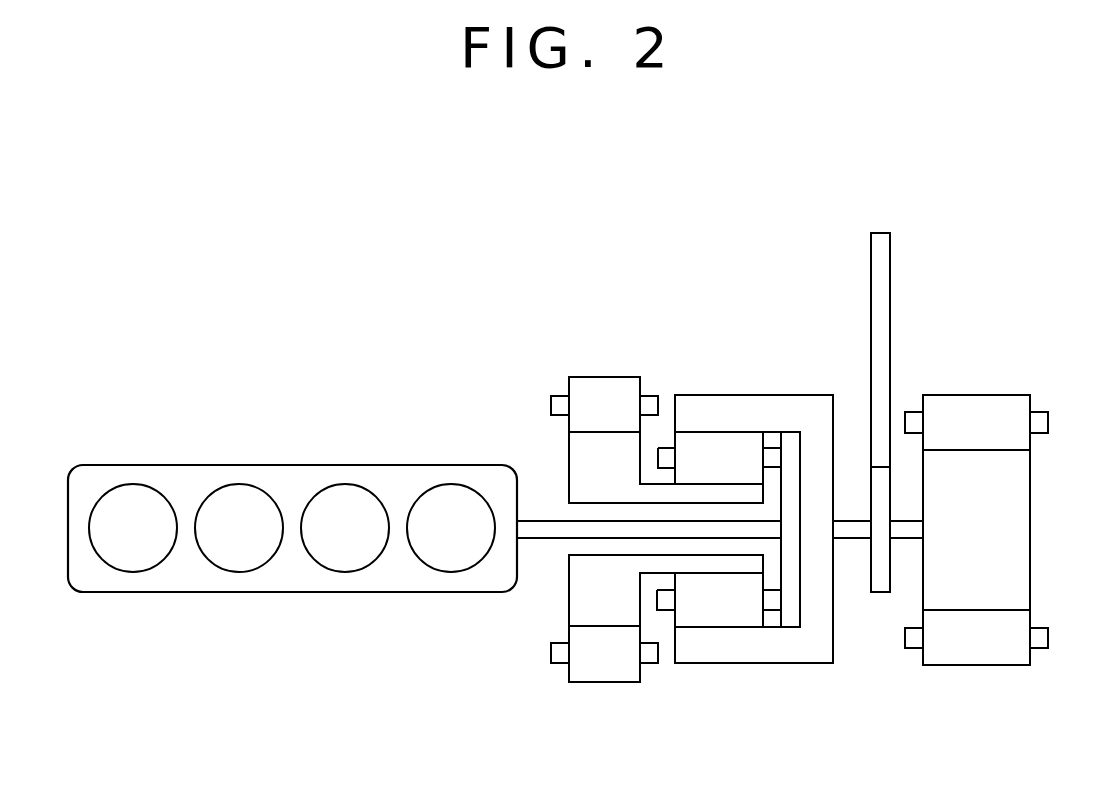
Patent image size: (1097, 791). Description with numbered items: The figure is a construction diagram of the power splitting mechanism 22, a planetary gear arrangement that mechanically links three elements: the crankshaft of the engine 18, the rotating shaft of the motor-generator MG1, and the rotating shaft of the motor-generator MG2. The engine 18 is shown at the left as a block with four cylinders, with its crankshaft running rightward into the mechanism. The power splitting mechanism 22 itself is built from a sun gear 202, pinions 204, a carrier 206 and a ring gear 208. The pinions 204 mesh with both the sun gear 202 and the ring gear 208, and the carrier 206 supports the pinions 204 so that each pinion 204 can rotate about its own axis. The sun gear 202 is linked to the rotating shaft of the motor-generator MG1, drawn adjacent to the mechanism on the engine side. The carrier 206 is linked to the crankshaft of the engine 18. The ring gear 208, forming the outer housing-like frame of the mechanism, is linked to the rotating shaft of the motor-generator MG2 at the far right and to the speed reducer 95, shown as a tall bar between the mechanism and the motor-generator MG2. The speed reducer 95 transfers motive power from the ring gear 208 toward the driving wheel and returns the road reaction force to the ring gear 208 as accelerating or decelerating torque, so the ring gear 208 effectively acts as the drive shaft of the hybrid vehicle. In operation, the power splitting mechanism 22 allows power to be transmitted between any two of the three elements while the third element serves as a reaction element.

The engine 18 is at (291, 465).
The power splitting mechanism 22 is at (763, 529).
The speed reducer 95 is at (905, 205).
The sun gear 202 is at (697, 573).
The pinions 204 is at (725, 627).
The carrier 206 is at (778, 563).
The ring gear 208 is at (822, 663).
The motor-generator MG1 is at (608, 377).
The motor-generator MG2 is at (983, 394).